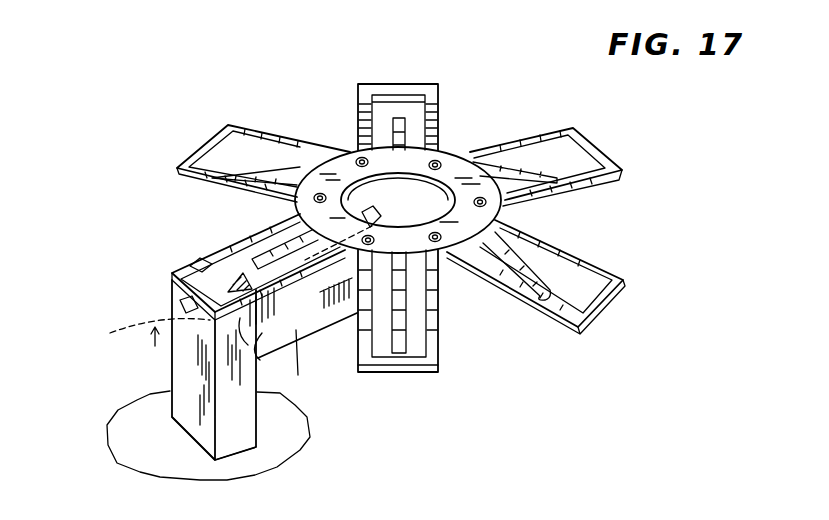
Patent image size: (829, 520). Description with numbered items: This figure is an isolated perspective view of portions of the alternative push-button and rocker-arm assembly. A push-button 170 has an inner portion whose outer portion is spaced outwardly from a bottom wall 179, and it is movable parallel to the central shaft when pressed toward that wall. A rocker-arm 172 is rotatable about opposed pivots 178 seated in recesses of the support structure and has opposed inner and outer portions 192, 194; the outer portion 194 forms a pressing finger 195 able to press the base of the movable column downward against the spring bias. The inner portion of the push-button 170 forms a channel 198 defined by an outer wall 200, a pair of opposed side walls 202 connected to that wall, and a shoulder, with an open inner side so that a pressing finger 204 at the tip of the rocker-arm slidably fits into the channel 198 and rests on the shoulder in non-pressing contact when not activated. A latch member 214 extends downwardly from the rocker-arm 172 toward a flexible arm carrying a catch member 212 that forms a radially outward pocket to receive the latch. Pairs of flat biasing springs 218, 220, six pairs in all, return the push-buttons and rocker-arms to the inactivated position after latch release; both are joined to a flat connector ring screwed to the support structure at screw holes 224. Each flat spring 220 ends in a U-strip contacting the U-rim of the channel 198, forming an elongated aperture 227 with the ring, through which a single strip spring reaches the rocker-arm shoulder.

The push-button 170 is at (190, 428).
The rocker-arm 172 is at (298, 375).
The pivots 178 is at (358, 313).
The bottom wall 179 is at (125, 418).
The inner portion 192 is at (370, 236).
The outer portion 194 is at (262, 340).
The pressing finger 195 is at (142, 332).
The channel 198 is at (188, 310).
The outer wall 200 is at (178, 360).
The side walls 202 is at (190, 267).
The pressing finger 204 is at (375, 208).
The catch member 212 is at (450, 158).
The latch member 214 is at (350, 322).
The flat biasing spring 218 is at (434, 85).
The flat spring 220 is at (407, 122).
The screw holes 224 is at (495, 204).
The elongated aperture 227 is at (243, 237).